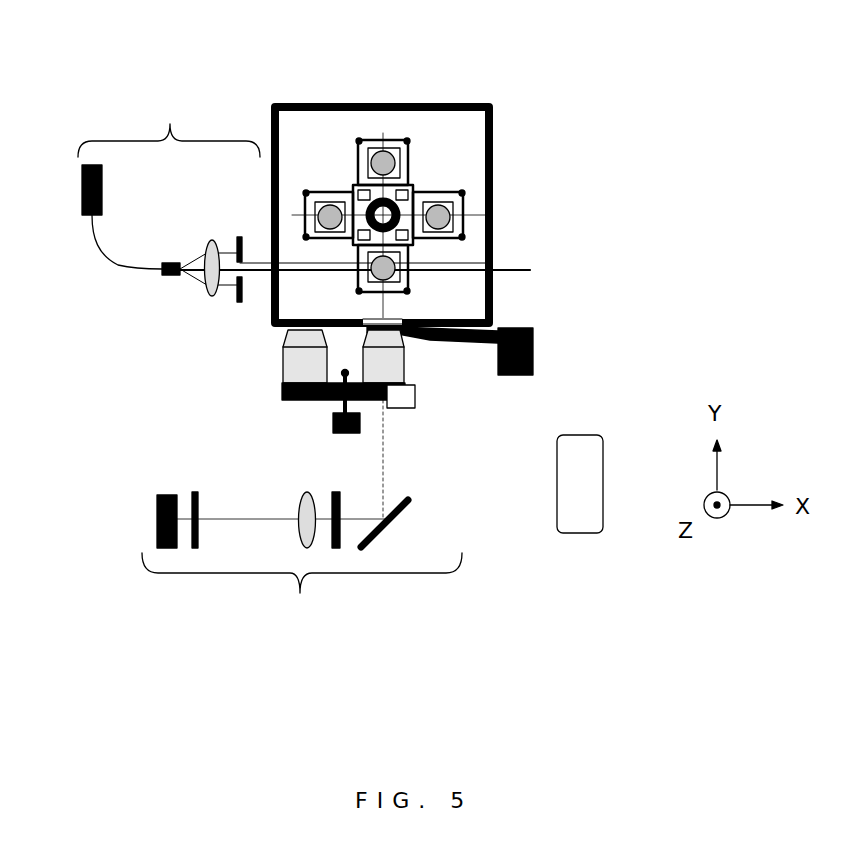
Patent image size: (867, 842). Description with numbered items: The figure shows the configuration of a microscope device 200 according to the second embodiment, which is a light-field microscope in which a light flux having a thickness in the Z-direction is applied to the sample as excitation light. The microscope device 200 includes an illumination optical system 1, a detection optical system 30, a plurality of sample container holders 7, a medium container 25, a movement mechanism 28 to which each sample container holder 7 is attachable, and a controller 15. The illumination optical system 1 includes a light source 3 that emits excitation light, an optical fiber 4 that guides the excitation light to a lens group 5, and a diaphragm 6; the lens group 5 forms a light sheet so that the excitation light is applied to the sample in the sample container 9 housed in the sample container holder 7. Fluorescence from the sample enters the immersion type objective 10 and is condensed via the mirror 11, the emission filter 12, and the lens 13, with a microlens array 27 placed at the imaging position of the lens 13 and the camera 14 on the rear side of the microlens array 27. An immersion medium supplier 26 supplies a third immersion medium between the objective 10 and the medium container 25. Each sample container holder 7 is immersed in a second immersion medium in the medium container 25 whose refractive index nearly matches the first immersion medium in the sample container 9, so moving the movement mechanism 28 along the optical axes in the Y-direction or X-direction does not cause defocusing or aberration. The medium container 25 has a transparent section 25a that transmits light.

The illumination optical system 1 is at (169, 119).
The light source 3 is at (82, 191).
The optical fiber 4 is at (111, 258).
The lens group 5 is at (212, 240).
The diaphragm 6 is at (240, 237).
The sample container holder 7 is at (384, 226).
The sample container 9 is at (408, 283).
The objective 10 is at (404, 360).
The mirror 11 is at (387, 523).
The emission filter 12 is at (340, 495).
The lens 13 is at (308, 492).
The camera 14 is at (165, 495).
The controller 15 is at (600, 450).
The medium container 25 is at (445, 103).
The transparent section 25a is at (272, 288).
The immersion medium supplier 26 is at (533, 356).
The microlens array 27 is at (198, 495).
The movement mechanism 28 is at (397, 192).
The detection optical system 30 is at (302, 595).
The microscope device 200 is at (636, 112).